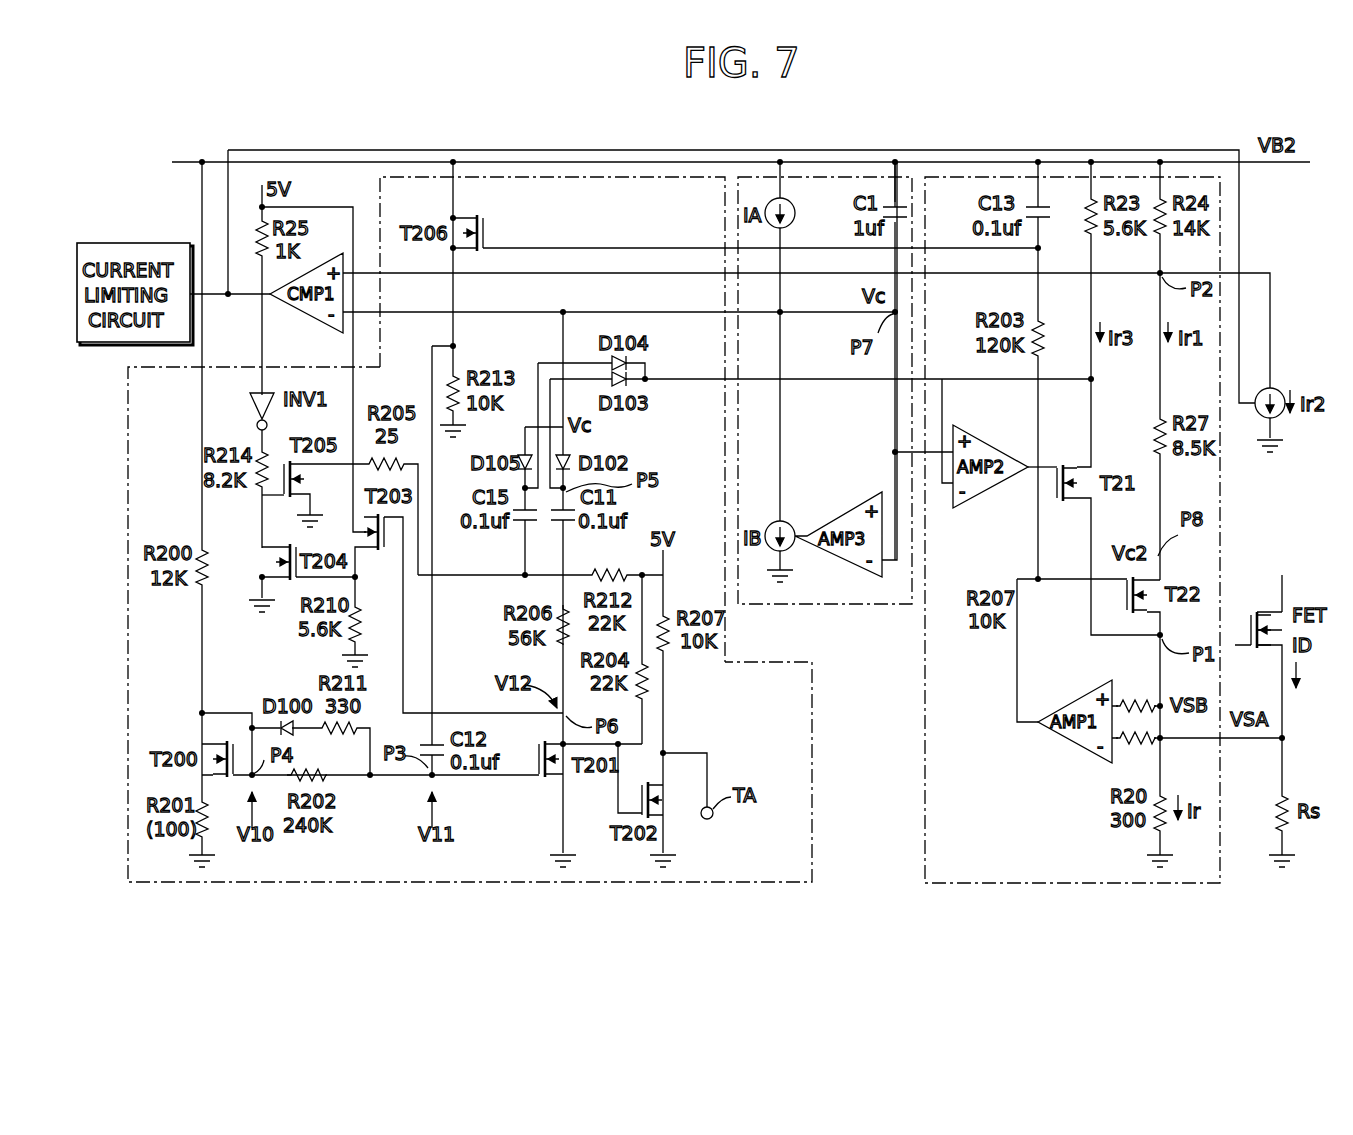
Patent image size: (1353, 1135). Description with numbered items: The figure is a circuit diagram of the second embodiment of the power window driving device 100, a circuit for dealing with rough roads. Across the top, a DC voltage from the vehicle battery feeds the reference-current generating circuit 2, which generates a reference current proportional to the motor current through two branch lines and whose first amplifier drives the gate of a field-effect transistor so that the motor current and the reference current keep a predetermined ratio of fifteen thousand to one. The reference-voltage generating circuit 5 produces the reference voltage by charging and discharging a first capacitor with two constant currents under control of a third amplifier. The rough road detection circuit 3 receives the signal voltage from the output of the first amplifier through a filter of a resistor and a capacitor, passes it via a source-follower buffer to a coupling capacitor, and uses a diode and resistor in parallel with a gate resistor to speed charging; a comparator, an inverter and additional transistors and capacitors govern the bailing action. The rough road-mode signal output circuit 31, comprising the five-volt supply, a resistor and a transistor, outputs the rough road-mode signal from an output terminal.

The power window driving device 100 is at (605, 138).
The rough road detection circuit 3 is at (522, 176).
The reference-voltage generating circuit 5 is at (820, 176).
The reference-current generating circuit 2 is at (979, 176).
The rough road-mode signal output circuit 31 is at (636, 858).